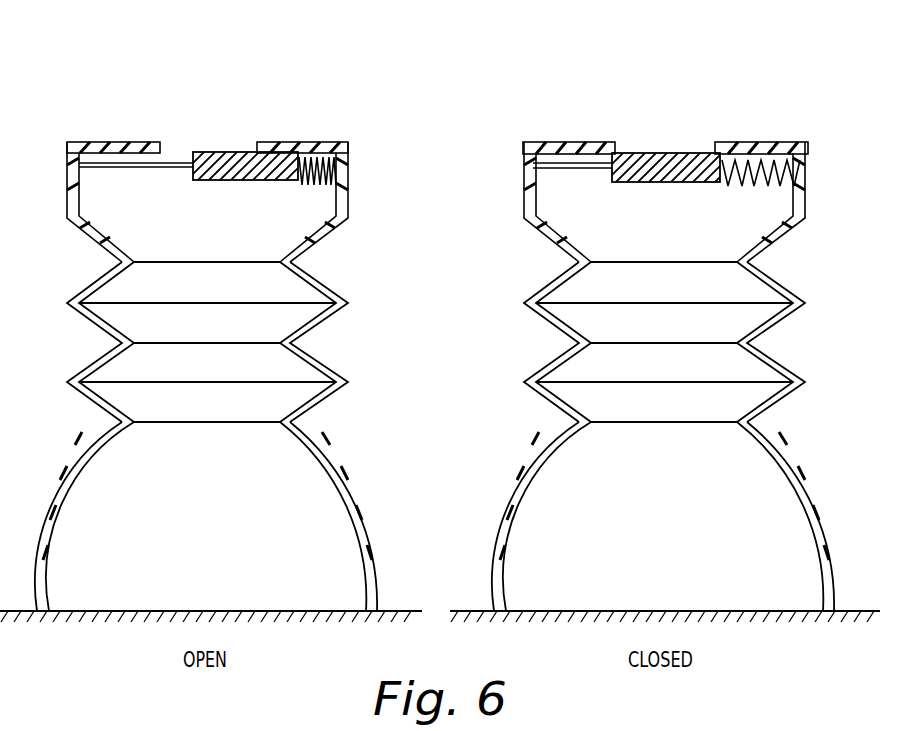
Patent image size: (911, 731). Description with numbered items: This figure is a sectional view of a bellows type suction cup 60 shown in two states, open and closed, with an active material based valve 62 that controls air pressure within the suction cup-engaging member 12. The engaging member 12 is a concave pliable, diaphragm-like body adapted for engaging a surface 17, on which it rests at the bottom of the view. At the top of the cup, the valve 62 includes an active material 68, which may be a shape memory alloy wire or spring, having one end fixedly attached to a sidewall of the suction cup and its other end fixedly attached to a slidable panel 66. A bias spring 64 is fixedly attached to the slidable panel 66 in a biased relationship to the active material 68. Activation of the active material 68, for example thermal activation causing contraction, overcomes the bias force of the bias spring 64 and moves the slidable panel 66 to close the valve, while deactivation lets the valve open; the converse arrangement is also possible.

The suction cup 60 is at (141, 76).
The active material based valve 62 is at (233, 122).
The bias spring 64 is at (318, 185).
The slidable panel 66 is at (238, 182).
The active material 68 is at (147, 168).
The engaging member 12 is at (68, 482).
The surface 17 is at (398, 611).